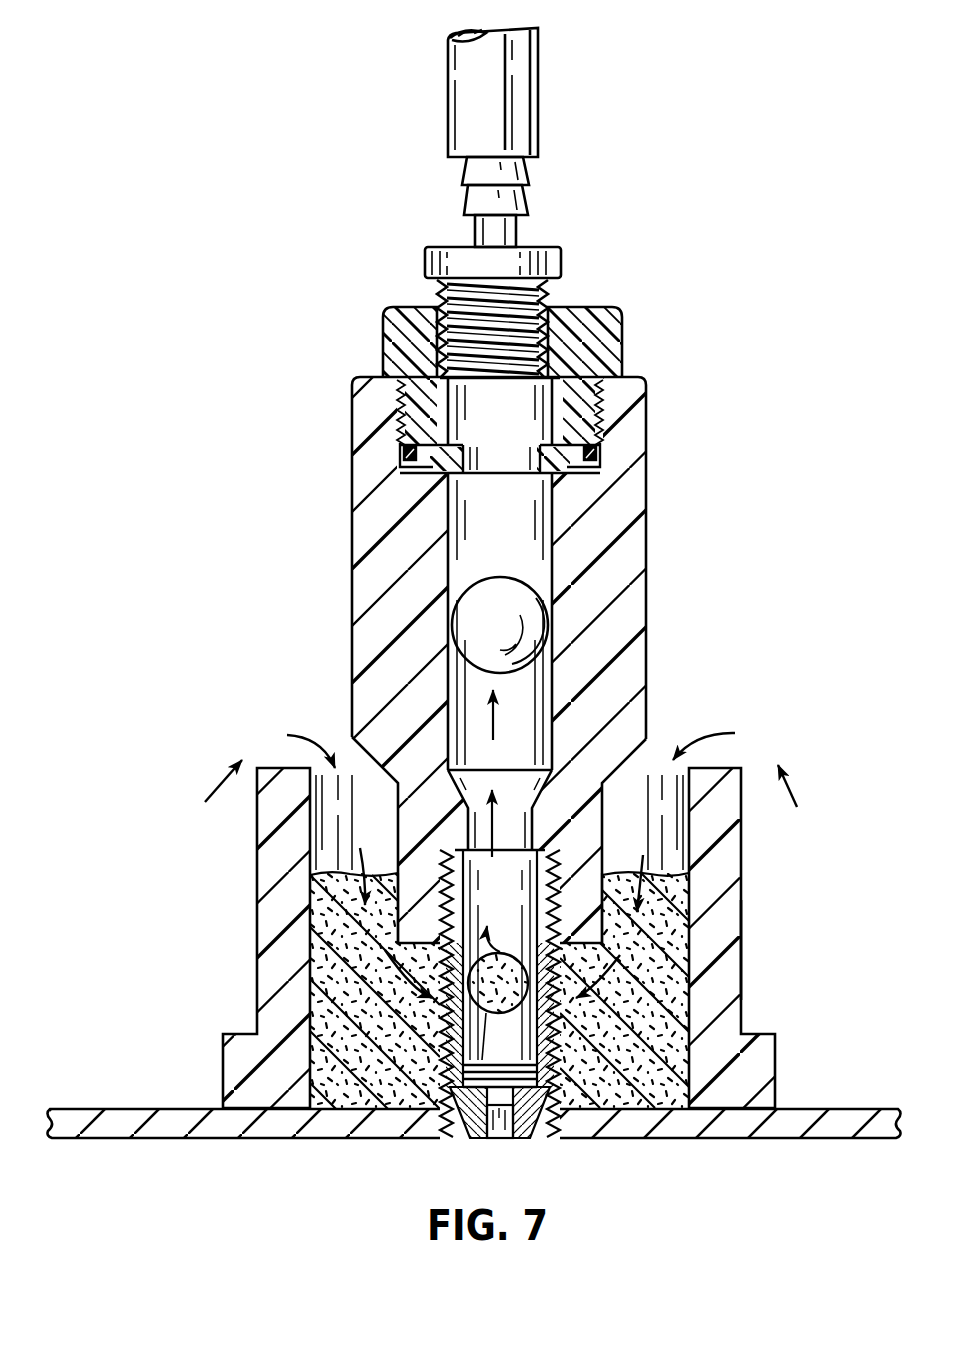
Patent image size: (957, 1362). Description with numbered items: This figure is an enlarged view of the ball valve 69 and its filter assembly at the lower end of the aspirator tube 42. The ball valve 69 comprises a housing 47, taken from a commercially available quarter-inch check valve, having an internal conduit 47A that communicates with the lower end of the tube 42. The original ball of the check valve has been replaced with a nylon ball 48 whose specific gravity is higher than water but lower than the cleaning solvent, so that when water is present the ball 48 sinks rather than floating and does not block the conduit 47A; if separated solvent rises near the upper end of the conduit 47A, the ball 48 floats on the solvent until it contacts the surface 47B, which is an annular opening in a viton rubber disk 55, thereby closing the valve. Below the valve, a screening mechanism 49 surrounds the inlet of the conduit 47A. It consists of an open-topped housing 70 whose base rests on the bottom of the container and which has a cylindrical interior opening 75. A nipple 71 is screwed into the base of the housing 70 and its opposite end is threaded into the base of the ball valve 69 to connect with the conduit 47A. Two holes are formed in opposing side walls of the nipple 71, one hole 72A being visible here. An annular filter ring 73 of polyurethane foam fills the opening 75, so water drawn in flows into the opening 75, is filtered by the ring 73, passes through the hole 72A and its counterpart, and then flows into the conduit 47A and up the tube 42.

The aspirator tube 42 is at (528, 102).
The housing 47 is at (652, 590).
The internal conduit 47A is at (552, 493).
The surface 47B is at (448, 476).
The nylon ball 48 is at (493, 607).
The screening mechanism 49 is at (752, 865).
The viton rubber disk 55 is at (437, 446).
The ball valve 69 is at (708, 466).
The housing 70 is at (744, 945).
The nipple 71 is at (524, 955).
The hole 72A is at (502, 1115).
The annular filter ring 73 is at (667, 760).
The cylindrical interior opening 75 is at (350, 767).